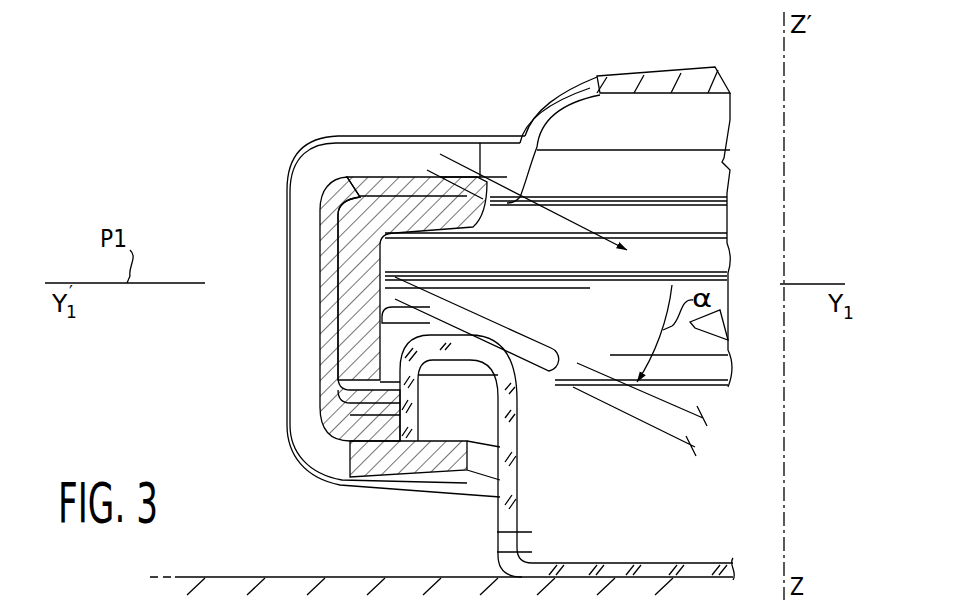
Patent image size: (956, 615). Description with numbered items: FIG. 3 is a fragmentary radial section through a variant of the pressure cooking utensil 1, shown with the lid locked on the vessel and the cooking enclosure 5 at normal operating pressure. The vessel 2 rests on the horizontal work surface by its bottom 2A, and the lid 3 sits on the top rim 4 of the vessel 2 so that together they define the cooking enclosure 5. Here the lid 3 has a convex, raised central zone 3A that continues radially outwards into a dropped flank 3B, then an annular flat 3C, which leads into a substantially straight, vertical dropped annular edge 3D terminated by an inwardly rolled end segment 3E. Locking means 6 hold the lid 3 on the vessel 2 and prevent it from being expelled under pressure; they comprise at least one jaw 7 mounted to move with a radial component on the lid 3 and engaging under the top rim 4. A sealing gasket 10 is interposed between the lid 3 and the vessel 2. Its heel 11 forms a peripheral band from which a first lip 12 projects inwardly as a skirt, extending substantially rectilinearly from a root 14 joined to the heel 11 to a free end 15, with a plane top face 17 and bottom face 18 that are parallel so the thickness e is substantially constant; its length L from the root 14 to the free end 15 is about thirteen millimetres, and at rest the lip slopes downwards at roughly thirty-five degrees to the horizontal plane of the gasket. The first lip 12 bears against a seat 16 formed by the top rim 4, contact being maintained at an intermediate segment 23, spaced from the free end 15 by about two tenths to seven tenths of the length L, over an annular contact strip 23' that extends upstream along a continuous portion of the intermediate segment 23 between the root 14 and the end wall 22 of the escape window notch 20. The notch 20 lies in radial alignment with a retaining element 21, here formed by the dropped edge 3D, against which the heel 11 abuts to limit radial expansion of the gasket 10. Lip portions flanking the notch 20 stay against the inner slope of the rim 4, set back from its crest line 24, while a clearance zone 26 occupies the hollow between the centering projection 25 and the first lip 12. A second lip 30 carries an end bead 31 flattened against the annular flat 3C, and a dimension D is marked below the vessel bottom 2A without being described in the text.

The cooking utensil 1 is at (243, 133).
The vessel 2 is at (502, 510).
The bottom of the vessel 2A is at (636, 563).
The lid 3 is at (591, 79).
The central zone 3A is at (667, 79).
The dropped flank 3B is at (533, 135).
The annular flat 3C is at (455, 203).
The dropped annular edge 3D is at (348, 222).
The inwardly rolled end segment 3E is at (385, 360).
The top rim 4 is at (480, 358).
The cooking enclosure 5 is at (656, 465).
The locking means 6 is at (338, 138).
The jaw 7 is at (310, 447).
The sealing gasket 10 is at (351, 246).
The heel 11 is at (333, 293).
The first lip 12 is at (449, 316).
The root 14 is at (394, 290).
The free end 15 is at (580, 365).
The seat 16 is at (475, 322).
The top face 17 is at (653, 340).
The bottom face 18 is at (540, 386).
The escape window notch 20 is at (571, 376).
The retaining element 21 is at (335, 305).
The end wall 22 is at (543, 355).
The intermediate segment 23 is at (508, 297).
The annular contact strip 23' is at (521, 409).
The crest line 24 is at (458, 400).
The centering projection 25 is at (375, 360).
The clearance zone 26 is at (402, 330).
The second lip 30 is at (413, 218).
The end bead 31 is at (500, 192).
The length of the first lip L is at (573, 200).
The thickness of the first lip e is at (703, 440).
The distance D is at (227, 578).